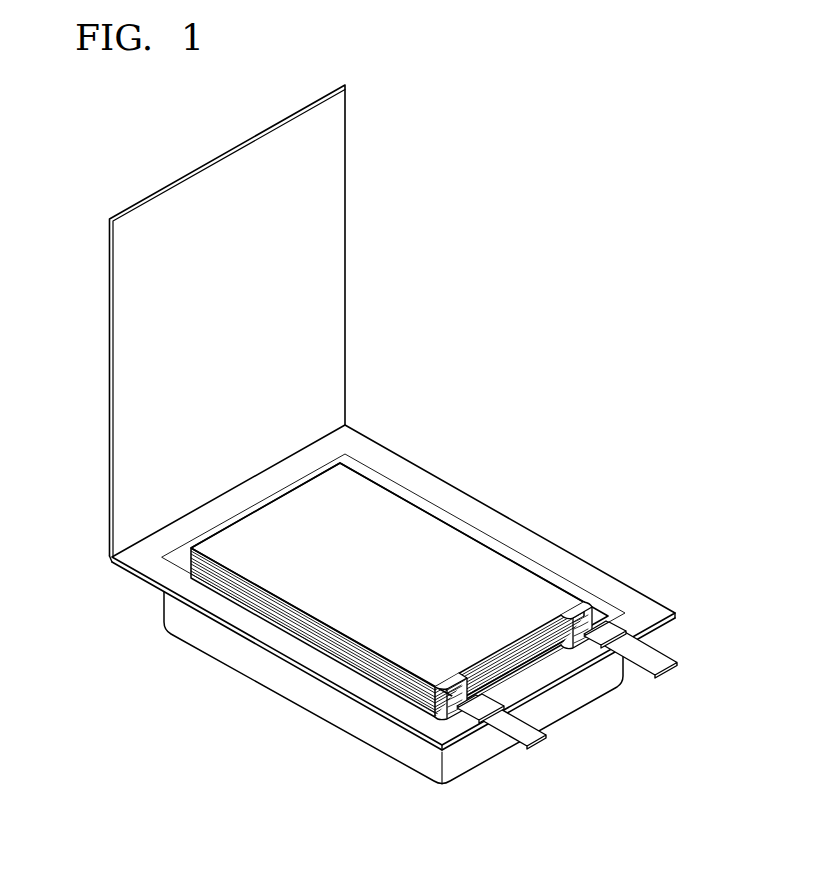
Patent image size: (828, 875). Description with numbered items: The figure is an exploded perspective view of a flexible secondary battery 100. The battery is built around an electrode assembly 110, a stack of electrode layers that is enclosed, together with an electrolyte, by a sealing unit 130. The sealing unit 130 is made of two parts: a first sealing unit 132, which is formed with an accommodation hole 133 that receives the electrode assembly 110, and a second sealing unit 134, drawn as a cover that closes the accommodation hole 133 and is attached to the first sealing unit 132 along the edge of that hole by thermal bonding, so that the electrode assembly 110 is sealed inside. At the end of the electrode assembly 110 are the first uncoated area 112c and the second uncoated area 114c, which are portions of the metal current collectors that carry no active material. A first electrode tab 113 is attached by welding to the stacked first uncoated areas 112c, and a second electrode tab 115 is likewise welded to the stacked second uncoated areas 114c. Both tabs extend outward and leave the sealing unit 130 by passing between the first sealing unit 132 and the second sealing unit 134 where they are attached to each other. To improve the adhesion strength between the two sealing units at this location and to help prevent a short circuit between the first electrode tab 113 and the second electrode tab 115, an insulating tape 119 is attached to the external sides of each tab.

The flexible secondary battery 100 is at (366, 448).
The electrode assembly 110 is at (415, 636).
The first uncoated area 112c is at (545, 614).
The first electrode tab 113 is at (662, 660).
The second uncoated area 114c is at (452, 701).
The second electrode tab 115 is at (537, 735).
The insulating tape 119 is at (477, 714).
The sealing unit 130 is at (347, 434).
The first sealing unit 132 is at (148, 563).
The accommodation hole 133 is at (385, 483).
The second sealing unit 134 is at (202, 321).